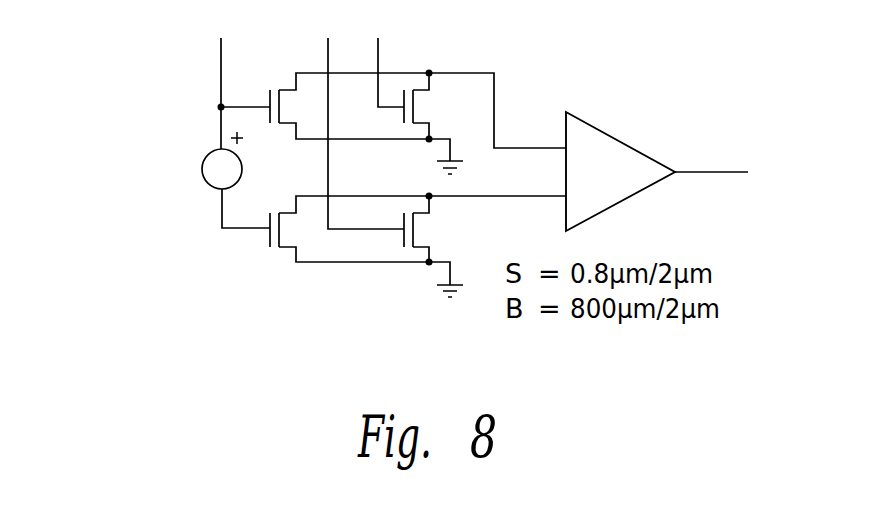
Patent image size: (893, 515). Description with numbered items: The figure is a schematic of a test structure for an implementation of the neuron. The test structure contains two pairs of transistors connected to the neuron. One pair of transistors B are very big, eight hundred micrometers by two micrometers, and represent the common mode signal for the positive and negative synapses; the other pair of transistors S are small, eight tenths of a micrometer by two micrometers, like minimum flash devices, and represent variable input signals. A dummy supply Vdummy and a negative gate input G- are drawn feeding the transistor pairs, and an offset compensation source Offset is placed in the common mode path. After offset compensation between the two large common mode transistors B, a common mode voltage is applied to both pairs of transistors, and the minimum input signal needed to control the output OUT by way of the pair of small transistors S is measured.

The dummy supply voltage input Vdummy is at (221, 77).
The negative gate input G- is at (383, 56).
The offset compensation Offset is at (151, 180).
The big transistor B is at (418, 167).
The small transistor S is at (433, 184).
The output amplifier / output terminal OUT is at (682, 171).